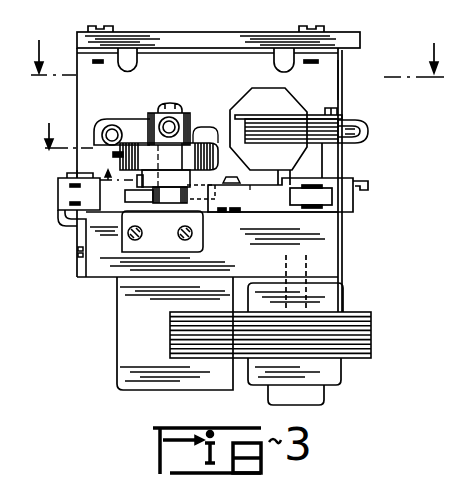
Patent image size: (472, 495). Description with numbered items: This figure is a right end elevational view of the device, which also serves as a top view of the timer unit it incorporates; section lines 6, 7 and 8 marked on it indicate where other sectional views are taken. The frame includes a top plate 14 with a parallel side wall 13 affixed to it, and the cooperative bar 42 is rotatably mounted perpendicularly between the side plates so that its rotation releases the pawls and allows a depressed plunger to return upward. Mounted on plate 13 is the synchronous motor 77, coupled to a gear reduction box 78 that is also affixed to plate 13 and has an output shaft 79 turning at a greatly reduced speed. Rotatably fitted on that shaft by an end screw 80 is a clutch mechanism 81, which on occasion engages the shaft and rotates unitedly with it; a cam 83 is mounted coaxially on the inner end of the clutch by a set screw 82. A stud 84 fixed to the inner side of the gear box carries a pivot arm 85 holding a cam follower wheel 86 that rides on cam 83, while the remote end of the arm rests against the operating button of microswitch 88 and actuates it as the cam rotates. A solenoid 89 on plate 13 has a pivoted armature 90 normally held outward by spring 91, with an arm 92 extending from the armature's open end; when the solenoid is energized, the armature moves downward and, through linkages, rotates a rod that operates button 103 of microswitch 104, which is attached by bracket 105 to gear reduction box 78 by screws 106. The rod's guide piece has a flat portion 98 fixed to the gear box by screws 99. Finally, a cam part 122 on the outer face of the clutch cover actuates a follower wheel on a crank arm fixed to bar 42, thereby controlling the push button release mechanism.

The section line 6- 6 is at (237, 48).
The section line 7- 7 is at (68, 126).
The section line 8- 8 is at (116, 168).
The side wall 13 is at (339, 78).
The top plate 14 is at (361, 42).
The cooperative bar 42 is at (112, 131).
The synchronous motor 77 is at (373, 318).
The gear reduction box 78 is at (324, 247).
The output shaft 79 is at (157, 157).
The end screw 80 is at (173, 110).
The clutch mechanism 81 is at (208, 142).
The set screw 82 is at (190, 203).
The cam 83 is at (125, 194).
The stud 84 is at (231, 177).
The pivot arm 85 is at (253, 190).
The cam follower wheel 86 is at (153, 197).
The microswitch 88 is at (355, 199).
The solenoid 89 is at (297, 89).
The armature 90 is at (253, 146).
The spring 91 is at (365, 118).
The arm 92 is at (240, 117).
The flat portion 98 is at (127, 246).
The screws 99 is at (180, 237).
The button 103 is at (77, 170).
The microswitch 104 is at (67, 198).
The bracket 105 is at (58, 215).
The screws 106 is at (78, 258).
The cam part 122 is at (198, 133).